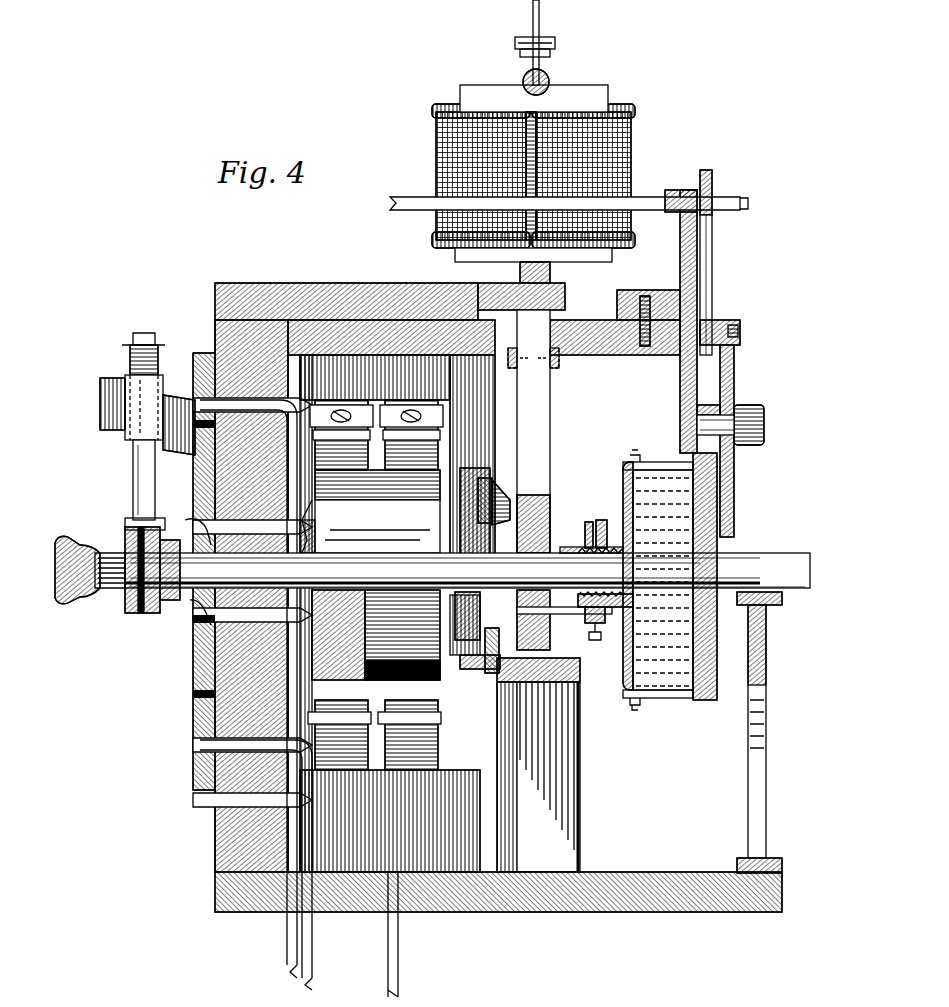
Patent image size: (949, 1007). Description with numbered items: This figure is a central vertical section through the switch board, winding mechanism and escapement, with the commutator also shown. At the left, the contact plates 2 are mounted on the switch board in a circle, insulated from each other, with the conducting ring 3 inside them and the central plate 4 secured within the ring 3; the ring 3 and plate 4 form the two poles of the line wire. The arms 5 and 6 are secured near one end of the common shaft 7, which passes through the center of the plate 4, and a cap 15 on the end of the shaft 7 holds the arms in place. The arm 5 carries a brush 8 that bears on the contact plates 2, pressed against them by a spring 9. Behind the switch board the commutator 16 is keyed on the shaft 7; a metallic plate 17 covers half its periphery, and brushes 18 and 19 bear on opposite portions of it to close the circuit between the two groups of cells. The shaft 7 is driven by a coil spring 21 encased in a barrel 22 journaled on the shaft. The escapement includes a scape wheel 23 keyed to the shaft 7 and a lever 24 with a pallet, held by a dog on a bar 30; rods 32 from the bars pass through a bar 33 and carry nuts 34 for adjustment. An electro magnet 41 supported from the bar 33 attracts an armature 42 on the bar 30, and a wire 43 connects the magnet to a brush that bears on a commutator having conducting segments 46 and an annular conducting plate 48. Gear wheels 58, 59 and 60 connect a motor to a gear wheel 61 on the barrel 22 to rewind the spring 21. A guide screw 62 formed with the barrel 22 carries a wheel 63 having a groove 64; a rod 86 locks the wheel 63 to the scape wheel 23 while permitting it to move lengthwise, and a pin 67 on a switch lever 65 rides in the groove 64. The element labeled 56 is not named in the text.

The contact plates 2 is at (206, 352).
The ring 3 is at (215, 465).
The central plate 4 is at (190, 520).
The arm 5 is at (133, 482).
The arm 6 is at (128, 615).
The shaft 7 is at (165, 600).
The brush 8 is at (172, 405).
The spring 9 is at (130, 356).
The cap 15 is at (72, 598).
The commutator 16 is at (370, 526).
The metallic plate 17 is at (377, 485).
The brushes 18 is at (376, 435).
The brushes 19 is at (374, 735).
The coil spring 21 is at (648, 470).
The barrel 22 is at (660, 690).
The scape wheel 23 is at (548, 522).
The lever 24 is at (533, 431).
The bar 30 is at (535, 197).
The rods 32 is at (540, 25).
The bar 33 is at (550, 78).
The nuts 34 is at (556, 50).
The electro magnet 41 is at (436, 170).
The armature 42 is at (612, 260).
The wire 43 is at (467, 616).
The conducting segments 46 is at (478, 468).
The annular conducting plate 48 is at (486, 478).
The contact 56 is at (503, 490).
The gear wheel 58 is at (712, 225).
The gear wheel 59 is at (712, 280).
The gear wheel 60 is at (735, 382).
The gear wheel 61 is at (717, 655).
The guide screw 62 is at (620, 546).
The wheel 63 is at (606, 520).
The groove 64 is at (590, 522).
The lever 65 is at (613, 576).
The pin 67 is at (602, 632).
The rod 86 is at (556, 614).